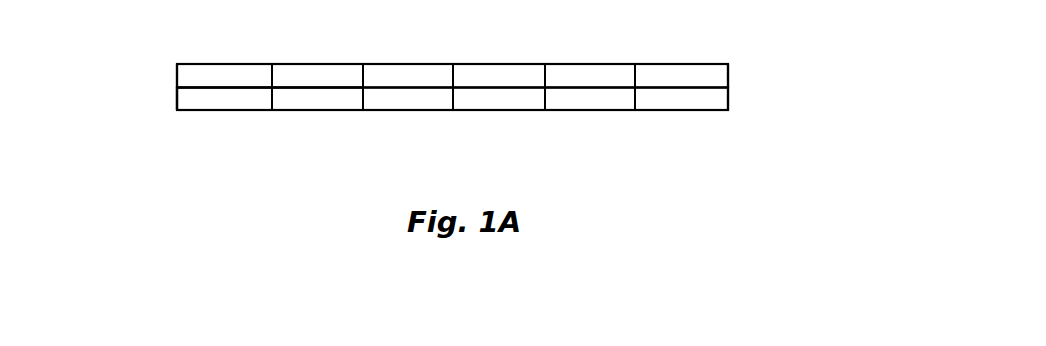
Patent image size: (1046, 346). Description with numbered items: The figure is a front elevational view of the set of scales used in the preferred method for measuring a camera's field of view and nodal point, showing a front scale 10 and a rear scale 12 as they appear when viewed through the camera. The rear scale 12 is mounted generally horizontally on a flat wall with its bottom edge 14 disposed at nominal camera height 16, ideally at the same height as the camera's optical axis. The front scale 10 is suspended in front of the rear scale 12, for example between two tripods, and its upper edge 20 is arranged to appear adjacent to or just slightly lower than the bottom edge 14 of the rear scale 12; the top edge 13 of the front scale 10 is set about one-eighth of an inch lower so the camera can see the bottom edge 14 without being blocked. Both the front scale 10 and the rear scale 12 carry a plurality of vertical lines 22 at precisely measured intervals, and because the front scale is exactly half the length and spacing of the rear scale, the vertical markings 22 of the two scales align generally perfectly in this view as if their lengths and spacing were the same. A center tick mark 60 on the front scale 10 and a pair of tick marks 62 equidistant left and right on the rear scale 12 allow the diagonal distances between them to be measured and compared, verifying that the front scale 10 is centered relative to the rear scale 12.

The front scale 10 is at (728, 99).
The rear scale 12 is at (728, 78).
The top edge of the front scale 13 is at (287, 88).
The bottom edge of the rear scale 14 is at (215, 90).
The nominal camera height 16 is at (163, 92).
The upper edge of the front scale 20 is at (597, 83).
The vertical lines 22 is at (545, 75).
The center tick mark 60 is at (453, 95).
The tick marks 62 is at (176, 75).